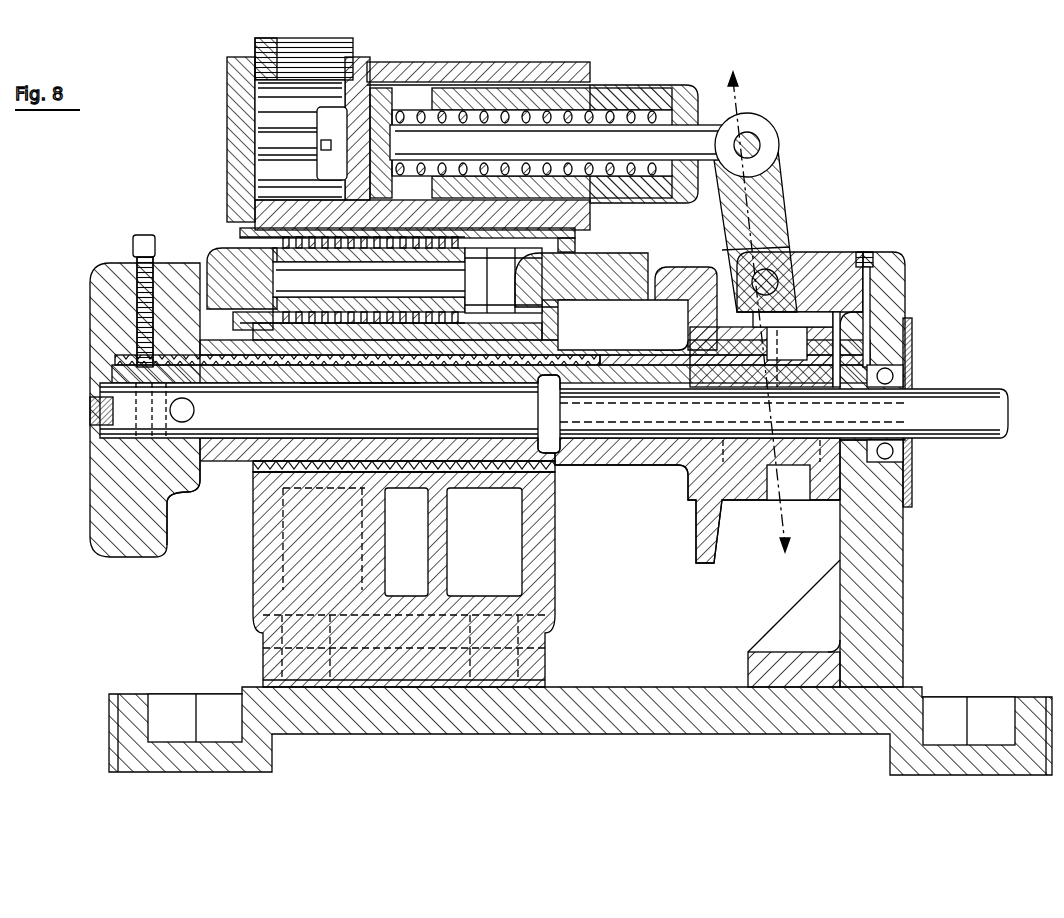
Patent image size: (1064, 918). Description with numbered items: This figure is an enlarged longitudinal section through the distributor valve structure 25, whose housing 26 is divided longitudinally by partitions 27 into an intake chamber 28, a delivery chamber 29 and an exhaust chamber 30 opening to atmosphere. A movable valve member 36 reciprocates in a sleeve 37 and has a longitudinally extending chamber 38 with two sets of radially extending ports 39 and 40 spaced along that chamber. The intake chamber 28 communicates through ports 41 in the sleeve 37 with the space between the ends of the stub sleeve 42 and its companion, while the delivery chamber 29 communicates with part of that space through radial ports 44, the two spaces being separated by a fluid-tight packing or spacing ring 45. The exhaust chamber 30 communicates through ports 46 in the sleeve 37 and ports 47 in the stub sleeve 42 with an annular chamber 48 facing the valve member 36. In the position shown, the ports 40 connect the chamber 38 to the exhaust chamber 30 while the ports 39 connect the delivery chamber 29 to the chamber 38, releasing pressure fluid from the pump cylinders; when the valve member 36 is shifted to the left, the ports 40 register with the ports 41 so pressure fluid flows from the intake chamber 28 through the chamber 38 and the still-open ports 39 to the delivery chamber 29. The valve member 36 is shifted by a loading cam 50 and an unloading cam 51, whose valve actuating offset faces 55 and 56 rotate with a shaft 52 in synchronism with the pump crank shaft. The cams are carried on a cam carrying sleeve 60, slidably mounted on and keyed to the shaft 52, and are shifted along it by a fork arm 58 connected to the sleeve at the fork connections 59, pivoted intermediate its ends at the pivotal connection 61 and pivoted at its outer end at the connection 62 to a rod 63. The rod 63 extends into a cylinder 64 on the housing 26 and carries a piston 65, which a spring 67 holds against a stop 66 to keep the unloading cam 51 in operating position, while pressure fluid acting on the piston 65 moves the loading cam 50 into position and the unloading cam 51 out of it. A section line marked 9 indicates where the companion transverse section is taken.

The section line 9- 9 is at (755, 319).
The distributor valve structure 25 is at (556, 599).
The housing 26 is at (405, 579).
The partitions 27 is at (440, 530).
The intake chamber 28 is at (403, 578).
The delivery chamber 29 is at (283, 537).
The exhaust chamber 30 is at (505, 543).
The movable valve member 36 is at (680, 285).
The sleeve 37 is at (555, 328).
The longitudinally extending chamber 38 is at (235, 268).
The radially extending ports 39 is at (277, 248).
The radially extending ports 40 is at (545, 325).
The ports 41 is at (549, 390).
The stub sleeve 42 is at (578, 237).
The radial ports 44 is at (322, 362).
The packing or spacing ring 45 is at (368, 350).
The ports 46 is at (490, 330).
The ports 47 is at (628, 273).
The annular chamber 48 is at (512, 257).
The loading cam 50 is at (723, 543).
The unloading cam 51 is at (135, 413).
The shaft 52 is at (940, 393).
The valve actuating offset face 55 is at (680, 313).
The valve actuating offset face 56 is at (187, 493).
The fork arm 58 is at (790, 200).
The fork connections 59 is at (800, 527).
The cam carrying sleeve 60 is at (645, 453).
The pivotal connection 61 is at (800, 253).
The pivotal connection 62 is at (760, 142).
The rod 63 is at (673, 140).
The cylinder 64 is at (490, 65).
The piston 65 is at (385, 95).
The stop 66 is at (273, 130).
The spring 67 is at (603, 112).